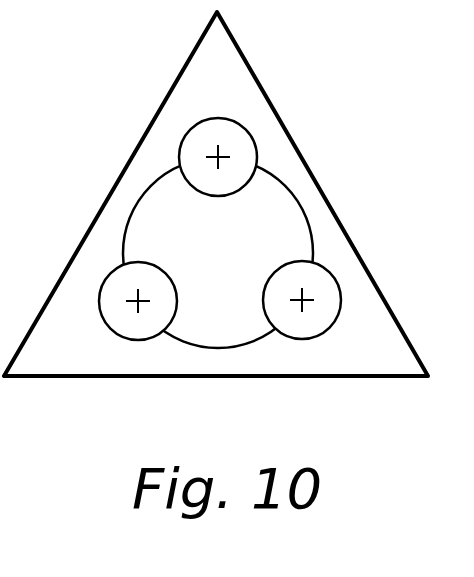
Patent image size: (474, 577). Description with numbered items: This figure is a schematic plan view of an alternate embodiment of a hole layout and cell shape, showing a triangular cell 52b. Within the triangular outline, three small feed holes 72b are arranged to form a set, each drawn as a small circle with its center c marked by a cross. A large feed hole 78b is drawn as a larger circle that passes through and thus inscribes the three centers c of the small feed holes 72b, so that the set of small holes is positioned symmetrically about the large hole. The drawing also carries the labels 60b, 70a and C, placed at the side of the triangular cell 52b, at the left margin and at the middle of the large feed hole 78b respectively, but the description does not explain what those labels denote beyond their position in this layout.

The triangular cell 52b is at (420, 110).
The triangular plate 60b is at (345, 225).
The plate 70a is at (13, 244).
The small feed holes 72b is at (138, 340).
The large feed hole 78b is at (239, 347).
The centers c is at (220, 156).
The common center C is at (218, 254).